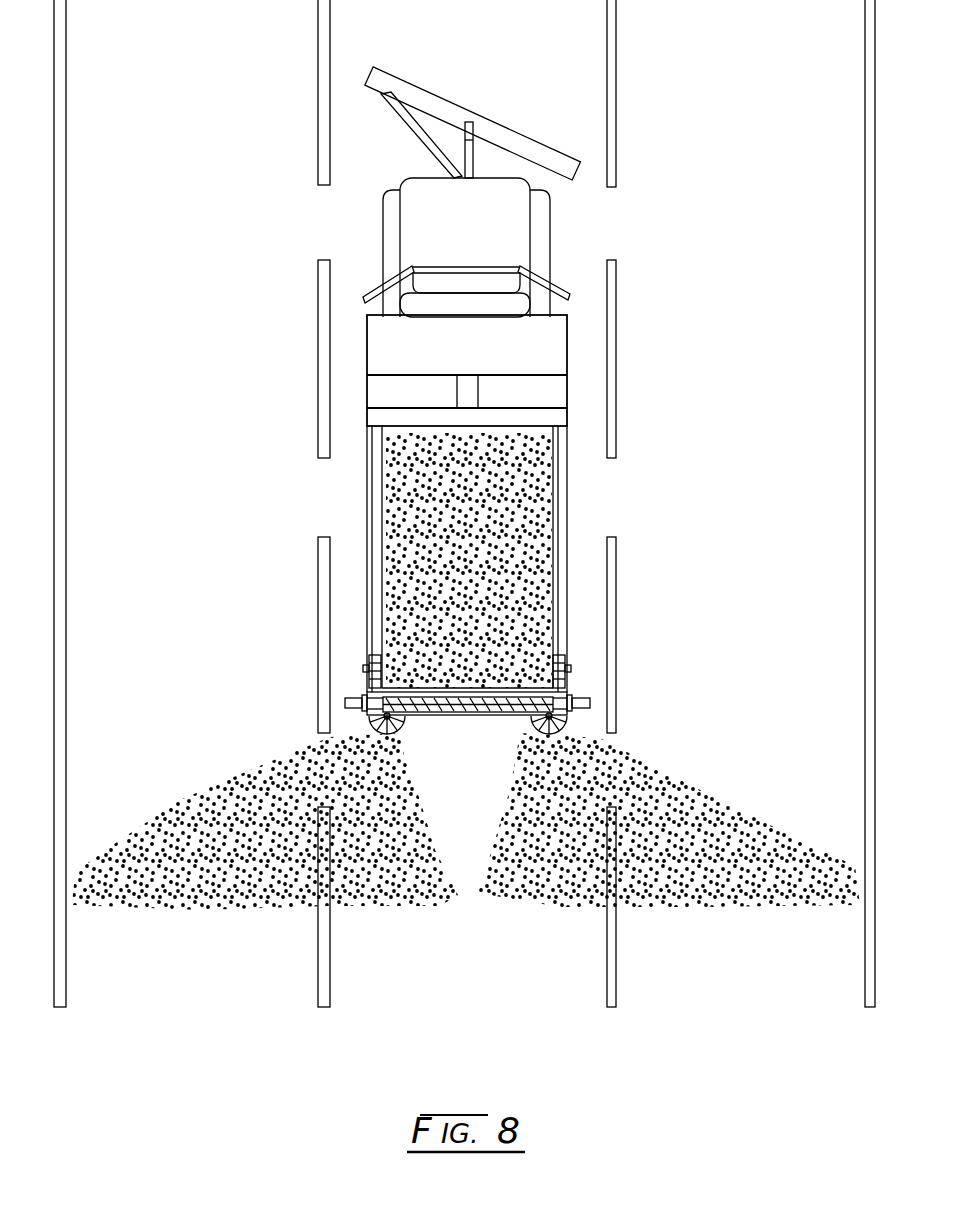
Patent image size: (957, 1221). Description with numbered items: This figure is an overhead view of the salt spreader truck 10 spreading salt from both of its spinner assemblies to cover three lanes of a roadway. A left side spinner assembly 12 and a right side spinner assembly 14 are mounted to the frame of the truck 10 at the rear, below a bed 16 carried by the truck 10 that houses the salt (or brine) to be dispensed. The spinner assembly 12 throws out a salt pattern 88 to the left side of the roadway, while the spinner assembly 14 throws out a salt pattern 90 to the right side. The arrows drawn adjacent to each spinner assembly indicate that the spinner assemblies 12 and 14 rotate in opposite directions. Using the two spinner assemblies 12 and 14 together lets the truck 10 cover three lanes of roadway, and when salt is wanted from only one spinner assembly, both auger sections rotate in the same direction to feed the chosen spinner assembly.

The salt spreader truck 10 is at (511, 410).
The left side spinner assembly 12 is at (362, 728).
The right side spinner assembly 14 is at (570, 728).
The bed 16 is at (573, 515).
The salt pattern 88 is at (263, 877).
The salt pattern 90 is at (678, 853).